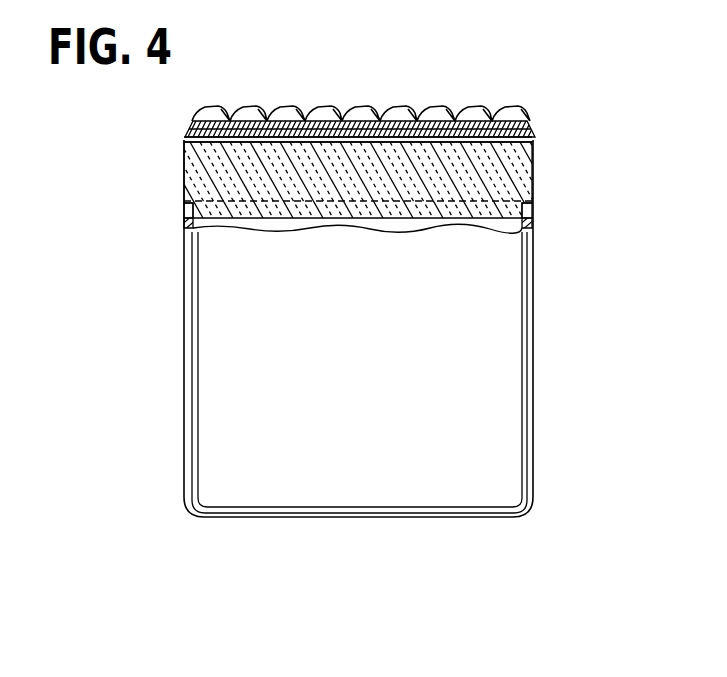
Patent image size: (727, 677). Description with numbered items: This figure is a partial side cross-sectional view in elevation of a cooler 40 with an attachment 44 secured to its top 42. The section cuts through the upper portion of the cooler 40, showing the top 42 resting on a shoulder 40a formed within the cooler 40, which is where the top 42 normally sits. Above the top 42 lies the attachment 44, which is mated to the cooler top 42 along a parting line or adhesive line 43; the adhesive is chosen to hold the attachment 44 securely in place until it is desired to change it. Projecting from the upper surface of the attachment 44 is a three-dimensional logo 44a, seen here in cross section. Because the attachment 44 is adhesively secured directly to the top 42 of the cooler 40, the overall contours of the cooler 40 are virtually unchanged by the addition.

The cooler 40 is at (533, 229).
The shoulder 40a is at (533, 190).
The top 42 is at (533, 165).
The parting line or adhesive line 43 is at (530, 126).
The attachment 44 is at (536, 132).
The three-dimensional logo 44a is at (433, 107).